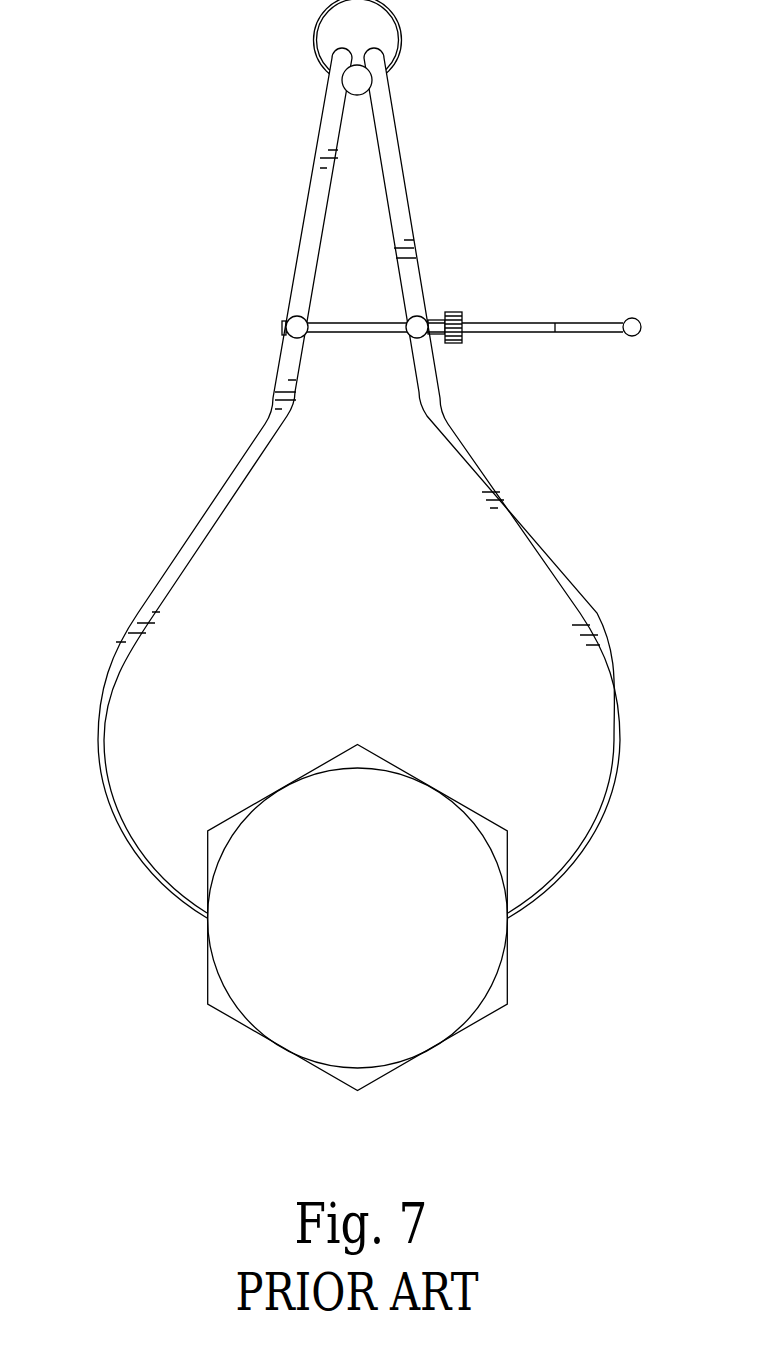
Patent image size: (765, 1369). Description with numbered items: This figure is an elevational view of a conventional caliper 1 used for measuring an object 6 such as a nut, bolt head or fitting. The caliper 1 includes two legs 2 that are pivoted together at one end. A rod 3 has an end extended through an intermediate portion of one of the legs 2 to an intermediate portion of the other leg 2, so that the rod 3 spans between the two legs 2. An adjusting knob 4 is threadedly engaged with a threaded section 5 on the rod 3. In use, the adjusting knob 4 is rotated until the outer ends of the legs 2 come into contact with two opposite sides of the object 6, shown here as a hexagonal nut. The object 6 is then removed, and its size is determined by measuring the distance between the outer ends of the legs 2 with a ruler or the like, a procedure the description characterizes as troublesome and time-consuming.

The caliper 1 is at (480, 197).
The legs 2 is at (217, 517).
The rod 3 is at (590, 334).
The adjusting knob 4 is at (455, 312).
The threaded section 5 is at (535, 323).
The object 6 is at (473, 952).